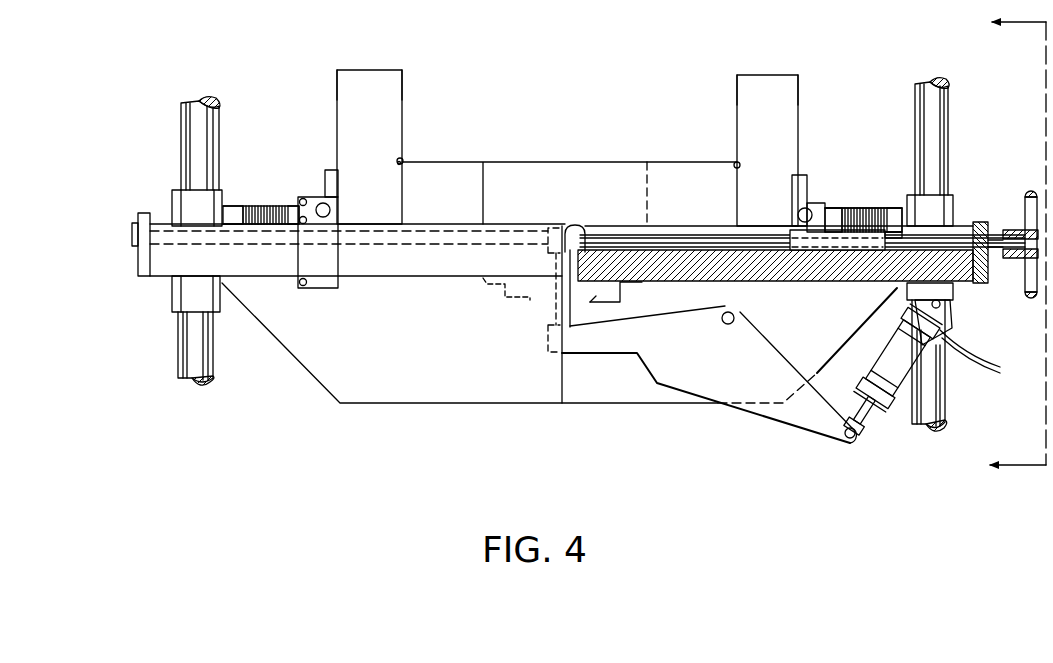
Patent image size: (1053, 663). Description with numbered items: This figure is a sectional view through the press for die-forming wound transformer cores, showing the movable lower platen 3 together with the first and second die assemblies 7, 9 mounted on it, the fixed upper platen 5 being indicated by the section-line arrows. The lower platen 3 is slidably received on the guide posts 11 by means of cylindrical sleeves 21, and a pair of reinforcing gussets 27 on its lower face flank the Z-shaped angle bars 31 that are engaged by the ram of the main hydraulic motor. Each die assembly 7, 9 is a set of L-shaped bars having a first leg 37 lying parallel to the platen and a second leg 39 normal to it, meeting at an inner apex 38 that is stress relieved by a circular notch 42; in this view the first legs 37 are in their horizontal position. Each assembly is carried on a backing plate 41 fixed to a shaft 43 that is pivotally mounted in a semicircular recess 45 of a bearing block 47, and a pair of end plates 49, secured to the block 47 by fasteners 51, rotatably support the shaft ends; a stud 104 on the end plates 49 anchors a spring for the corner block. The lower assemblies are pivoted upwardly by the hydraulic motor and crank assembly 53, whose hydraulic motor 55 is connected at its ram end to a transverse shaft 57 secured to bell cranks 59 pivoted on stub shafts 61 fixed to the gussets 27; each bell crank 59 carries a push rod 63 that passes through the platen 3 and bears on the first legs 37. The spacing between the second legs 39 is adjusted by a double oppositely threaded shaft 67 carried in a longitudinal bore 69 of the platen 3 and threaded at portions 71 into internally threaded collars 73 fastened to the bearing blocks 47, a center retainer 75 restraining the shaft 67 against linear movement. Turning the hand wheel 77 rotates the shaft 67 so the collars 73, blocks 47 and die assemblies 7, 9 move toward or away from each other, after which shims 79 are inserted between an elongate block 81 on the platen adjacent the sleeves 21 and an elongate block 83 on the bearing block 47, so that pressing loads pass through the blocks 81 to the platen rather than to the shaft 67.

The lower platen 3 is at (160, 263).
The upper platen 5 is at (995, 241).
The first die assembly 7 is at (332, 104).
The second die assembly 9 is at (800, 108).
The guide posts 11 is at (192, 345).
The cylindrical sleeves 21 is at (190, 198).
The reinforcing gussets 27 is at (447, 385).
The Z-shaped angle bars 31 is at (492, 296).
The first leg 37 is at (487, 172).
The inner apex 38 is at (403, 160).
The second leg 39 is at (402, 107).
The backing plate 41 is at (333, 170).
The circular notch 42 is at (398, 165).
The shaft 43 is at (331, 210).
The semicircular recess 45 is at (832, 212).
The bearing block 47 is at (814, 208).
The end plates 49 is at (338, 265).
The fasteners 51 is at (303, 199).
The hydraulic motor and crank assembly 53 is at (845, 452).
The hydraulic motor 55 is at (892, 350).
The transverse shaft 57 is at (857, 437).
The bell cranks 59 is at (822, 422).
The stub shafts 61 is at (736, 318).
The push rod 63 is at (572, 300).
The double oppositely threaded shaft 67 is at (958, 248).
The longitudinal bore 69 is at (802, 256).
The threaded portions 71 is at (822, 249).
The internally threaded collars 73 is at (866, 249).
The center retainer 75 is at (775, 265).
The hand wheel 77 is at (1027, 196).
The shims 79 is at (263, 205).
The elongate block 81 is at (236, 208).
The elongate block 83 is at (296, 214).
The stud 104 is at (302, 286).